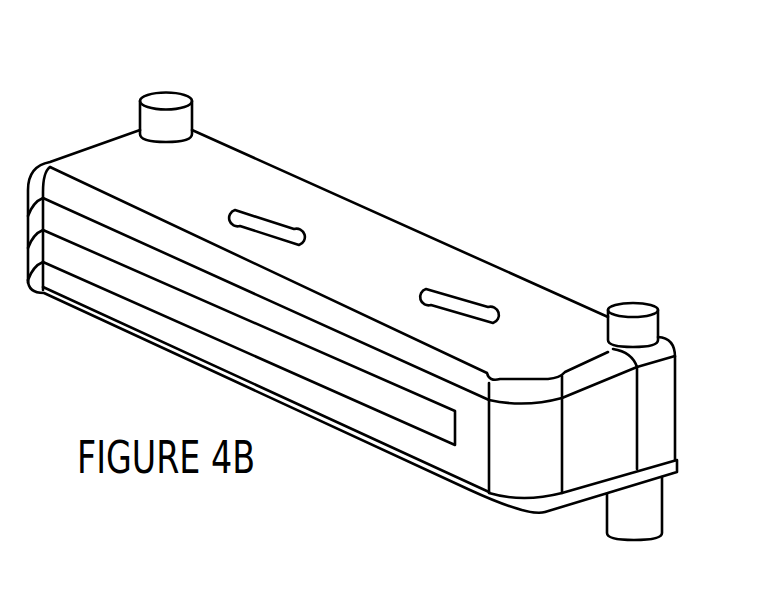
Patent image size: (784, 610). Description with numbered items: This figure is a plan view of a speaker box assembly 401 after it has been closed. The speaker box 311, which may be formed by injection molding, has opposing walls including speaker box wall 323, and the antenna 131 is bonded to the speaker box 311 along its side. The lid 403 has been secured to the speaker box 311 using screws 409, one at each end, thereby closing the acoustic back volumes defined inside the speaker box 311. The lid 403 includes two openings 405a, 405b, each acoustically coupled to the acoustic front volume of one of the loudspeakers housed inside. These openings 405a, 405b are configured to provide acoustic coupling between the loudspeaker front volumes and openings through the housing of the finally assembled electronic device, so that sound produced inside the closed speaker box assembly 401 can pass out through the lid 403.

The speaker box assembly 401 is at (333, 483).
The lid 403 is at (118, 165).
The opening 405a is at (268, 222).
The opening 405b is at (460, 307).
The screw 409 is at (167, 100).
The antenna 131 is at (183, 327).
The speaker box 311 is at (613, 427).
The speaker box wall 323 is at (470, 470).